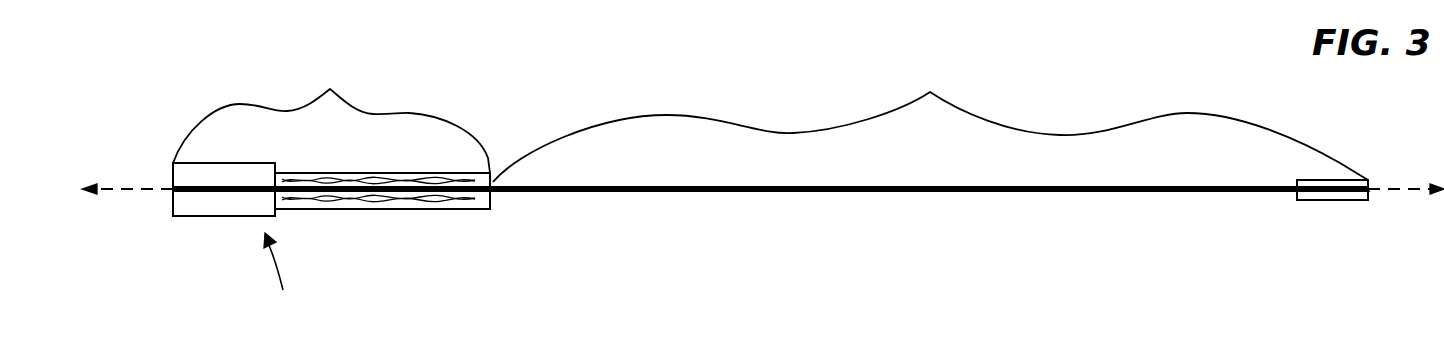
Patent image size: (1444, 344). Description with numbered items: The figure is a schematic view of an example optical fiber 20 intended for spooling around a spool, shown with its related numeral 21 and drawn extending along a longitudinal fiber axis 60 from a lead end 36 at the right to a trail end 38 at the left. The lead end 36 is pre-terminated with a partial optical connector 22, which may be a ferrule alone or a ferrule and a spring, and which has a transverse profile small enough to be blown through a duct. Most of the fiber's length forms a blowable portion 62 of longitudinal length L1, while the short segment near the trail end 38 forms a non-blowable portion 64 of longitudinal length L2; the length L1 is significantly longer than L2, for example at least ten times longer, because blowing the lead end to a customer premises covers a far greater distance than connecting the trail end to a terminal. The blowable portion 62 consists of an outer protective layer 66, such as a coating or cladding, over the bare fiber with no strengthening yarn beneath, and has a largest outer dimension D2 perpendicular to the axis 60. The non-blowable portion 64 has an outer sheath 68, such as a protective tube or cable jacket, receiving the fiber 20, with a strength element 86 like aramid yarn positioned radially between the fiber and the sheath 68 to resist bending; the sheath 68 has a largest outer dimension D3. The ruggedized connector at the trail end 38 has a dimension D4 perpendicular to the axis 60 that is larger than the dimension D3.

The optical fiber 20 is at (770, 224).
The core wire 21 is at (568, 193).
The partial optical connector 22 is at (1351, 218).
The lead end 36 is at (1370, 187).
The trail end 38 is at (168, 192).
The longitudinal fiber axis 60 is at (117, 187).
The blowable portion 62 is at (930, 124).
The non-blowable portion 64 is at (331, 117).
The outer protective layer 66 is at (1037, 187).
The outer sheath 68 is at (460, 210).
The strength element 86 is at (420, 177).
The longitudinal length of blowable portion L1 is at (930, 124).
The longitudinal length of non-blowable portion L2 is at (331, 117).
The largest outer dimension of blowable portion D2 is at (860, 177).
The largest outer dimension of sheath D3 is at (380, 165).
The dimension of ruggedized connector D4 is at (232, 156).